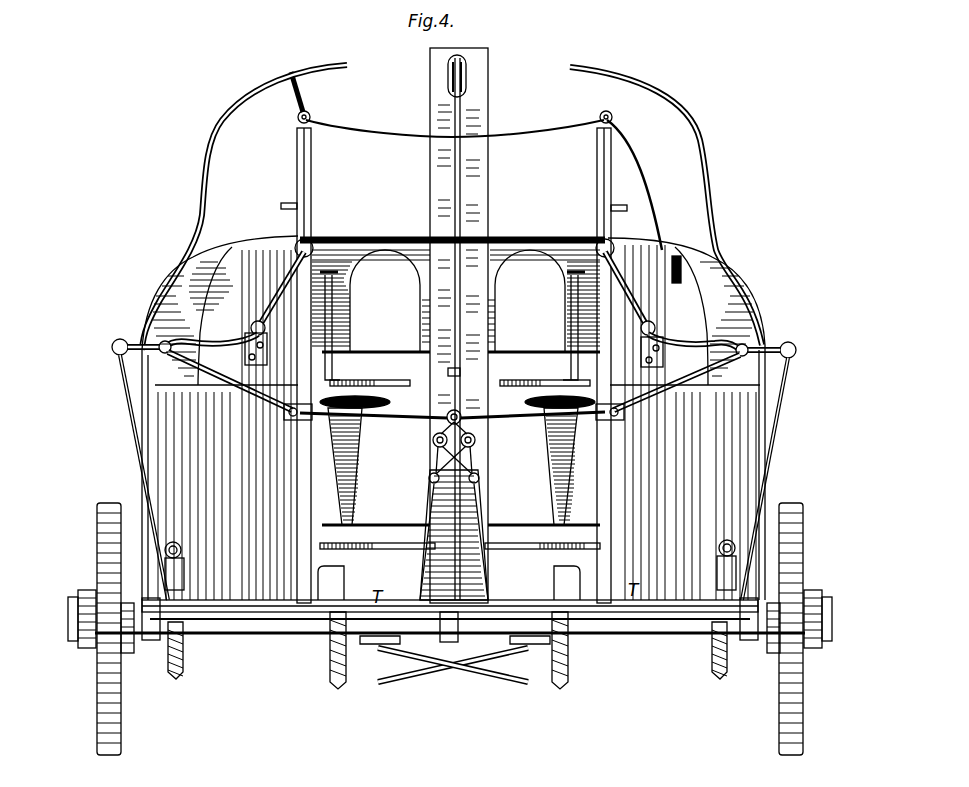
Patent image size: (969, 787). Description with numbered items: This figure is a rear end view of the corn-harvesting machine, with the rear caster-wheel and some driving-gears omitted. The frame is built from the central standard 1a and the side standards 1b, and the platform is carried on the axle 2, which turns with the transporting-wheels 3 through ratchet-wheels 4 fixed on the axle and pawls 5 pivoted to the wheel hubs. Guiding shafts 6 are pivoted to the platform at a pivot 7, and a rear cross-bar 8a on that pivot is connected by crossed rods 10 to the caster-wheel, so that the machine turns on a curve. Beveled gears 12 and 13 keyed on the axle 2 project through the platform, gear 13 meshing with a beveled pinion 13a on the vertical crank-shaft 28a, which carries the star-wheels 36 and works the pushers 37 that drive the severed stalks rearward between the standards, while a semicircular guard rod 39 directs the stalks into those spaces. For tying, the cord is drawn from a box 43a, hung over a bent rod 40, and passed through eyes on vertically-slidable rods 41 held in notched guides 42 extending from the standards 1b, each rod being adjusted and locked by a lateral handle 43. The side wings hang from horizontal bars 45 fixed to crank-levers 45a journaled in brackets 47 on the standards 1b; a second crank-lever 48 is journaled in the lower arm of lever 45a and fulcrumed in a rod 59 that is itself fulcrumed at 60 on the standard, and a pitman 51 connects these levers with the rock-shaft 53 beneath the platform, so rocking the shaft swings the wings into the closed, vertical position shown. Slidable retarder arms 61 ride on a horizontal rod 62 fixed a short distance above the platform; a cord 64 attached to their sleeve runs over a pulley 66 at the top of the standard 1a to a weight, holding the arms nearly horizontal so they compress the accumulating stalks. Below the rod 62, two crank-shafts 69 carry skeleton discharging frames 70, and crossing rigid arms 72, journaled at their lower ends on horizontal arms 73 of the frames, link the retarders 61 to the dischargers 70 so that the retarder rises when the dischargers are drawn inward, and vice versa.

The vertical central standard 1a is at (488, 200).
The side standard 1b is at (242, 300).
The axle 2 is at (280, 634).
The transporting-wheels 3 is at (121, 690).
The ratchet-wheels 4 is at (76, 635).
The pawls 5 is at (76, 598).
The shafts 6 is at (364, 138).
The pivot 7 is at (652, 206).
The rear cross-bar 8a is at (376, 642).
The crossed rods 10 is at (458, 672).
The beveled gear 12 is at (447, 660).
The beveled gear 13 is at (459, 656).
The beveled pinion 13a is at (344, 572).
The crank-shaft 28a is at (345, 310).
The star-wheels 36 is at (384, 378).
The pushers 37 is at (390, 360).
The guard rod 39 is at (318, 545).
The bent rod 40 is at (452, 207).
The vertically-slidable rods 41 is at (622, 112).
The guides 42 is at (295, 136).
The lateral handle 43 is at (281, 205).
The box 43a is at (722, 262).
The horizontal bars 45 is at (310, 242).
The crank-levers 45a is at (282, 290).
The brackets 47 is at (267, 355).
The crank-lever 48 is at (158, 342).
The pitman 51 is at (165, 426).
The rock-shaft 53 is at (226, 622).
The rod 59 is at (134, 410).
The fulcrum 60 is at (184, 548).
The slidable arms 61 is at (388, 415).
The horizontal rod 62 is at (448, 412).
The cord 64 is at (452, 186).
The pulley 66 is at (450, 66).
The crank-shafts 69 is at (432, 455).
The skeleton frames 70 is at (430, 500).
The rigid arms 72 is at (433, 440).
The arms 73 is at (429, 480).